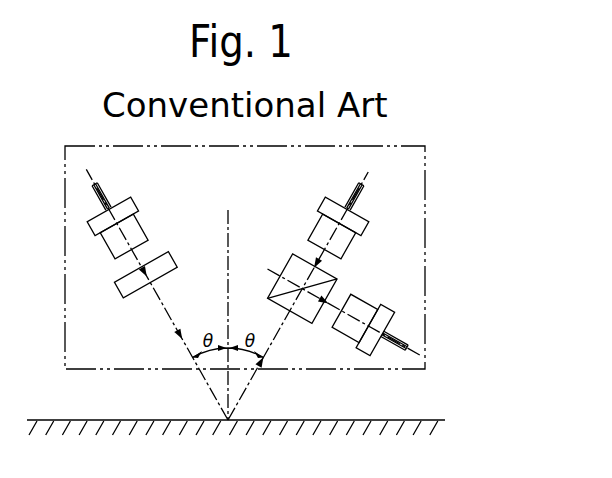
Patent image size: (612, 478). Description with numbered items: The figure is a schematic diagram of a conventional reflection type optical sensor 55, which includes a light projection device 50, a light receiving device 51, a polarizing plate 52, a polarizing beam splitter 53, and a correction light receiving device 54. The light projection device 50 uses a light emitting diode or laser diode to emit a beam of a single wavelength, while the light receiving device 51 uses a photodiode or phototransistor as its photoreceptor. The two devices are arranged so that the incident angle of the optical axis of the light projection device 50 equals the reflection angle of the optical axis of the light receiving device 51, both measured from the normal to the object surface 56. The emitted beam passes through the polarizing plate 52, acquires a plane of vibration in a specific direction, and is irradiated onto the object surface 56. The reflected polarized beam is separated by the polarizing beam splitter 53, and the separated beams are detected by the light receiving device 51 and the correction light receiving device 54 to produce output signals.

The light projection device 50 is at (137, 228).
The light receiving device 51 is at (322, 228).
The polarizing plate 52 is at (170, 260).
The polarizing beam splitter 53 is at (292, 262).
The correction light receiving device 54 is at (365, 300).
The reflection type optical sensor 55 is at (400, 145).
The object surface 56 is at (413, 420).